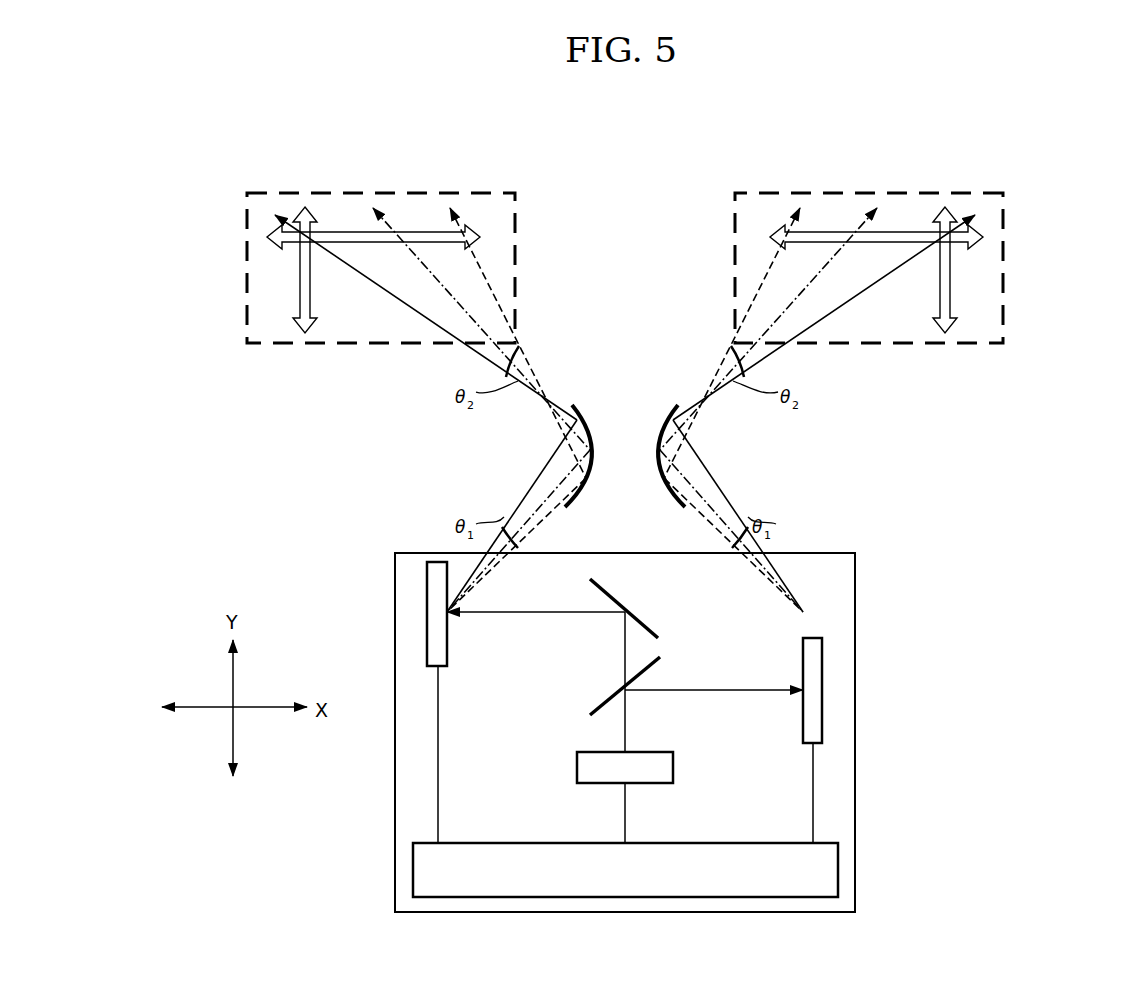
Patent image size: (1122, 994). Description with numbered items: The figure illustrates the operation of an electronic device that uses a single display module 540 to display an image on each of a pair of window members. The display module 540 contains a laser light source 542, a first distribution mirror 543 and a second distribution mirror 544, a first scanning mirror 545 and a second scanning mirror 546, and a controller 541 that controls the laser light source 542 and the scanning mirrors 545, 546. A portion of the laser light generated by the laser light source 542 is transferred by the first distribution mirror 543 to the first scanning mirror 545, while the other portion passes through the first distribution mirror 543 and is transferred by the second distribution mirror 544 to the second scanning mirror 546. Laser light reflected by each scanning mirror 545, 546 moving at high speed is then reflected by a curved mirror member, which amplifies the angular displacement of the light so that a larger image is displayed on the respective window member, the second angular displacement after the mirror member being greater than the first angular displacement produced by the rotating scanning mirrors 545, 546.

The display module 540 is at (857, 735).
The controller 541 is at (493, 843).
The laser light source 542 is at (657, 752).
The first distribution mirror 543 is at (606, 692).
The second distribution mirror 544 is at (641, 627).
The first scanning mirror 545 is at (812, 638).
The second scanning mirror 546 is at (448, 666).